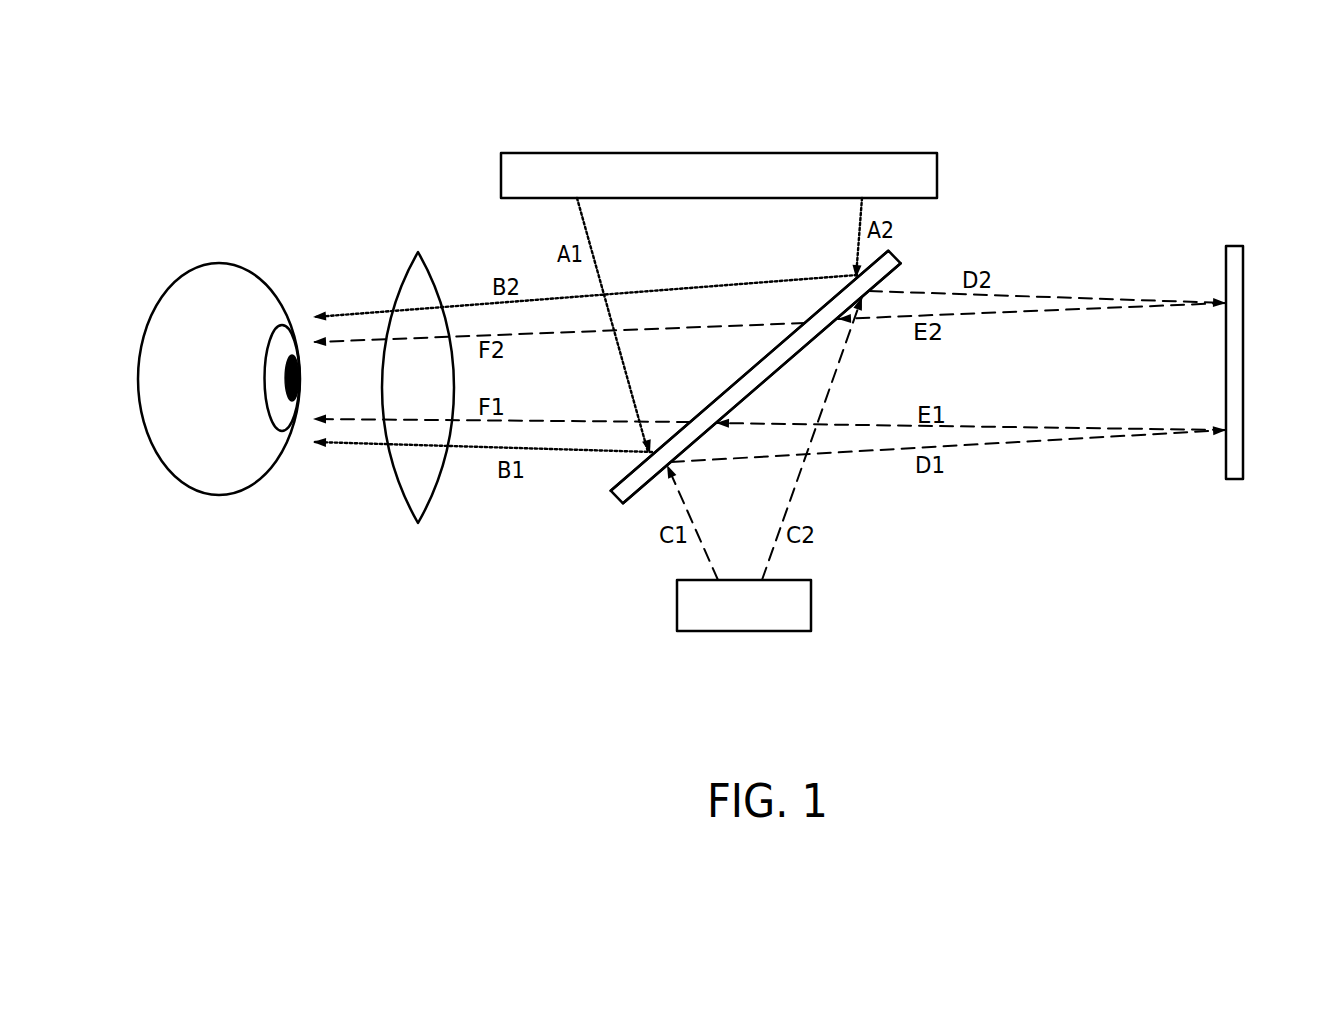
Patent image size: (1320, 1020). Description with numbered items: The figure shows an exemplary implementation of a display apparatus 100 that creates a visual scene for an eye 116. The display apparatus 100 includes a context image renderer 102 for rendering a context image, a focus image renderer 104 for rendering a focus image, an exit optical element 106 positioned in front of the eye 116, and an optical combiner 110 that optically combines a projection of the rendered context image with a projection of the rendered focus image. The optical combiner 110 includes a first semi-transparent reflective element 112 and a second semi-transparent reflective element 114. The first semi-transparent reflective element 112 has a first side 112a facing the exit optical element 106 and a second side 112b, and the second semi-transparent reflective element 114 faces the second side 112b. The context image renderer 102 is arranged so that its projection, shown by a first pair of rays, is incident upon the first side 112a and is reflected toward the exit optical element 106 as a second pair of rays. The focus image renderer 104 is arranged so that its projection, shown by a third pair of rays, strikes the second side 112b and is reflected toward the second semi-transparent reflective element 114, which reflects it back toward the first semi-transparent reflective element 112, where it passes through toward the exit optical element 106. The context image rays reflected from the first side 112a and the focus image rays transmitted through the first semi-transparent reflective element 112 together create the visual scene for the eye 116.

The display apparatus 100 is at (1200, 109).
The context image renderer 102 is at (698, 153).
The focus image renderer 104 is at (760, 631).
The exit optical element 106 is at (397, 277).
The optical combiner 110 is at (931, 259).
The first semi-transparent reflective element 112 is at (705, 408).
The first side 112a is at (727, 388).
The second side 112b is at (800, 352).
The second semi-transparent reflective element 114 is at (1237, 480).
The eye 116 is at (242, 488).